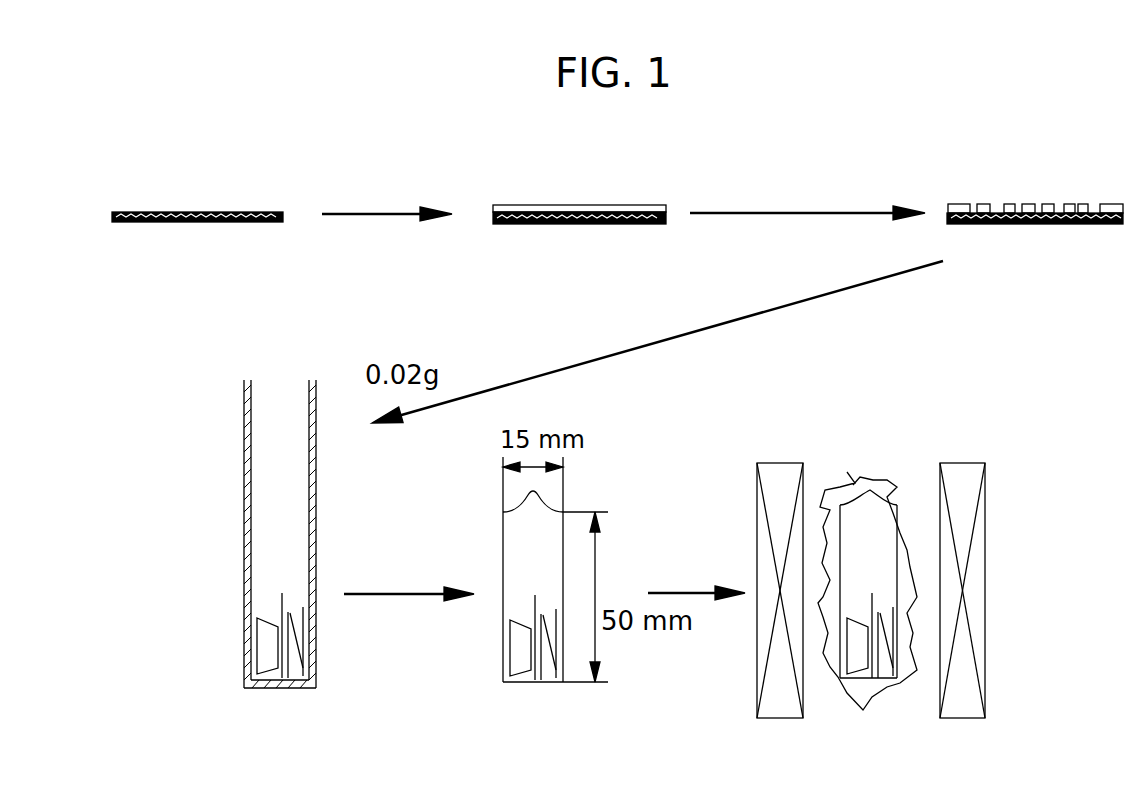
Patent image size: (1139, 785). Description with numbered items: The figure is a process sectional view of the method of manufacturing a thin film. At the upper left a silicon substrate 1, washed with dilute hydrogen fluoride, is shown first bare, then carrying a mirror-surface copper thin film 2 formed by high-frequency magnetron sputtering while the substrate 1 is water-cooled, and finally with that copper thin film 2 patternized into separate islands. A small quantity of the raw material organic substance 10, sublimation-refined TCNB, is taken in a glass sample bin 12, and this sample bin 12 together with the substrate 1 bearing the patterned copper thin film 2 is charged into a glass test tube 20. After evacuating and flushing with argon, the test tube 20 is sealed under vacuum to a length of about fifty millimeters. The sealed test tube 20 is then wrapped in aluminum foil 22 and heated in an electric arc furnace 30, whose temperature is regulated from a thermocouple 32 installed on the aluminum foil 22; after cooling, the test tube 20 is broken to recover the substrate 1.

The silicon substrate 1 is at (163, 212).
The copper thin film 2 is at (545, 208).
The raw material organic substance 10 is at (291, 612).
The glass sample bin 12 is at (285, 688).
The glass test tube 20 is at (246, 497).
The aluminum foil 22 is at (845, 480).
The electric arc furnace 30 is at (780, 478).
The thermocouple 32 is at (920, 583).